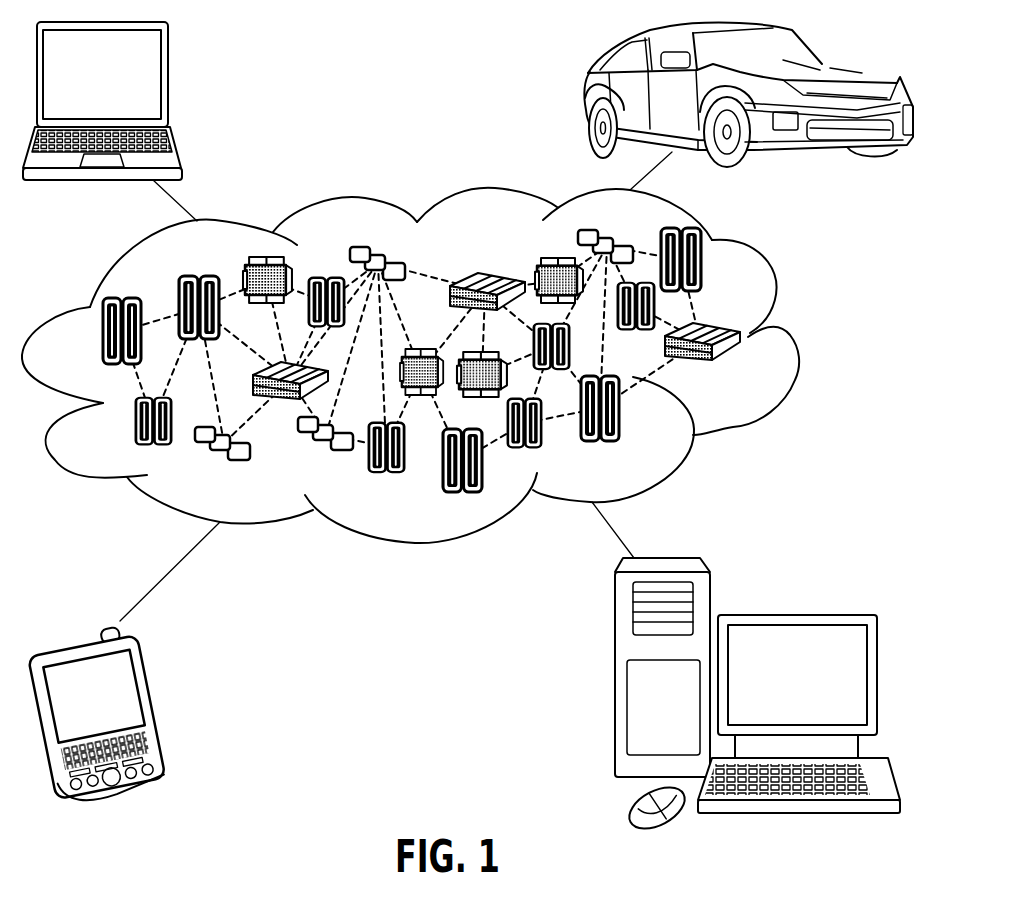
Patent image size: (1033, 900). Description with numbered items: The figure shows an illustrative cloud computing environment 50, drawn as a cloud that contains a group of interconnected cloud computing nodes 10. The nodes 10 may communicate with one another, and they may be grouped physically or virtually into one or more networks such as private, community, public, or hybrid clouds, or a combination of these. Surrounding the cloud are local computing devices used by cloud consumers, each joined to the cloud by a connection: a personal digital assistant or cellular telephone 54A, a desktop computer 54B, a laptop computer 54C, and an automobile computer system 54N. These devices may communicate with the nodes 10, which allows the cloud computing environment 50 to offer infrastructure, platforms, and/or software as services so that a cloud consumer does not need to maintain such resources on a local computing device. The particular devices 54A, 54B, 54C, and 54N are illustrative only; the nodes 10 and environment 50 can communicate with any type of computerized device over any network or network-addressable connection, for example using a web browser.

The cloud computing node 10 is at (744, 370).
The cloud computing environment 50 is at (797, 340).
The personal digital assistant or cellular telephone 54A is at (160, 703).
The desktop computer 54B is at (795, 615).
The laptop computer 54C is at (170, 80).
The automobile computer system 54N is at (586, 95).